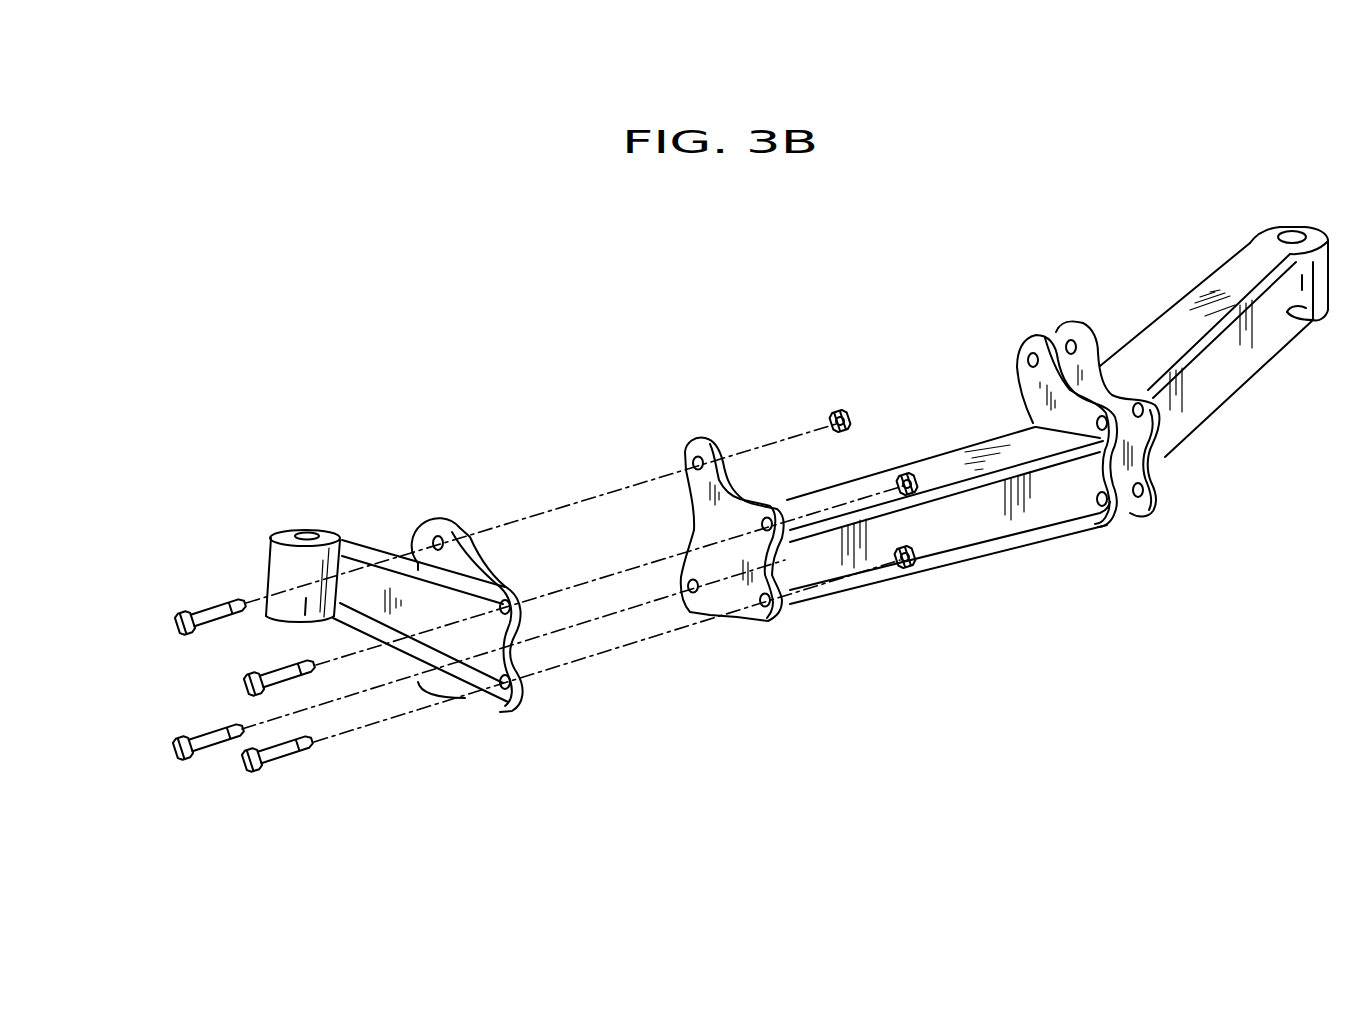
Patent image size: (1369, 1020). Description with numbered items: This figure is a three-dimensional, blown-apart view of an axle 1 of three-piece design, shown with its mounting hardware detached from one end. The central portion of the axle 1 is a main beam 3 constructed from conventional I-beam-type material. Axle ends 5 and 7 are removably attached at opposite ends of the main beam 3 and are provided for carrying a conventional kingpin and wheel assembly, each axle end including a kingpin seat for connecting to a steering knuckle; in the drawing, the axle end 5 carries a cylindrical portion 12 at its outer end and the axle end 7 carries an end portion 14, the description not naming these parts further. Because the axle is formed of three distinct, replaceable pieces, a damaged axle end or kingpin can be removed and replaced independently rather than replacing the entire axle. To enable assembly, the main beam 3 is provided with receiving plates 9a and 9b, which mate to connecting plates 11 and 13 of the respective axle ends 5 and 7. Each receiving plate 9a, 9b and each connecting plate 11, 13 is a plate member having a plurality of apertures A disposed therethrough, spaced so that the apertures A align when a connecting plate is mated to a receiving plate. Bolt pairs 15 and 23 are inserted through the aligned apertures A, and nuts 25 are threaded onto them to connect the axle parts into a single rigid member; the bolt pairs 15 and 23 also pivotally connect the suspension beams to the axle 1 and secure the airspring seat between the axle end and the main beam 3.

The axle 1 is at (907, 390).
The main beam 3 is at (1043, 513).
The axle end 5 is at (358, 560).
The axle end 7 is at (1222, 374).
The receiving plate 9a is at (697, 450).
The receiving plate 9b is at (1018, 385).
The connecting plate 11 is at (505, 708).
The bushing 12 is at (285, 550).
The connecting plate 13 is at (1087, 357).
The mounting lug 14 is at (1270, 232).
The bolt pair 15 is at (177, 633).
The bolt pair 23 is at (258, 694).
The nuts 25 is at (850, 423).
The apertures A is at (505, 600).